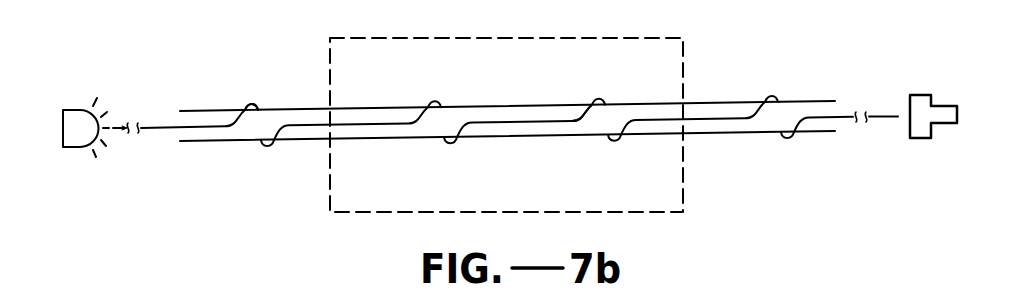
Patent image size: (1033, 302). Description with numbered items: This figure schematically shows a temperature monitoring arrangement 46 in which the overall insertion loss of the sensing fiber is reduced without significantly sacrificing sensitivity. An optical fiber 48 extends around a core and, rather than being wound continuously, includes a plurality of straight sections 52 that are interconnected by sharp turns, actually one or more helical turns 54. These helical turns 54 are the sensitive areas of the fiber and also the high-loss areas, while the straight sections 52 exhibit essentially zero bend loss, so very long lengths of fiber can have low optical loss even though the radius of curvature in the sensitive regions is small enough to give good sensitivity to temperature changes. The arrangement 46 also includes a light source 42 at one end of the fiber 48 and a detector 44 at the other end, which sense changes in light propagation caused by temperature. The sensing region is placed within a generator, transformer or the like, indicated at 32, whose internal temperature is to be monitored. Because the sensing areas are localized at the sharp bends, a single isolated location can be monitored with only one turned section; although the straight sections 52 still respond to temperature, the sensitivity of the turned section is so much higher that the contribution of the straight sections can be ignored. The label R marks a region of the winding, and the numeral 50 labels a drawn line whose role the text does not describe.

The dashed enclosure / sensing section 32 is at (349, 38).
The light source 42 is at (80, 148).
The connector / detector 44 is at (922, 139).
The wire assembly 46 is at (247, 50).
The helically wound wire 48 is at (160, 135).
The lower conductor 50 is at (252, 127).
The upper conductor 52 is at (314, 128).
The wire loop crossing 54 is at (254, 106).
The region R is at (577, 111).